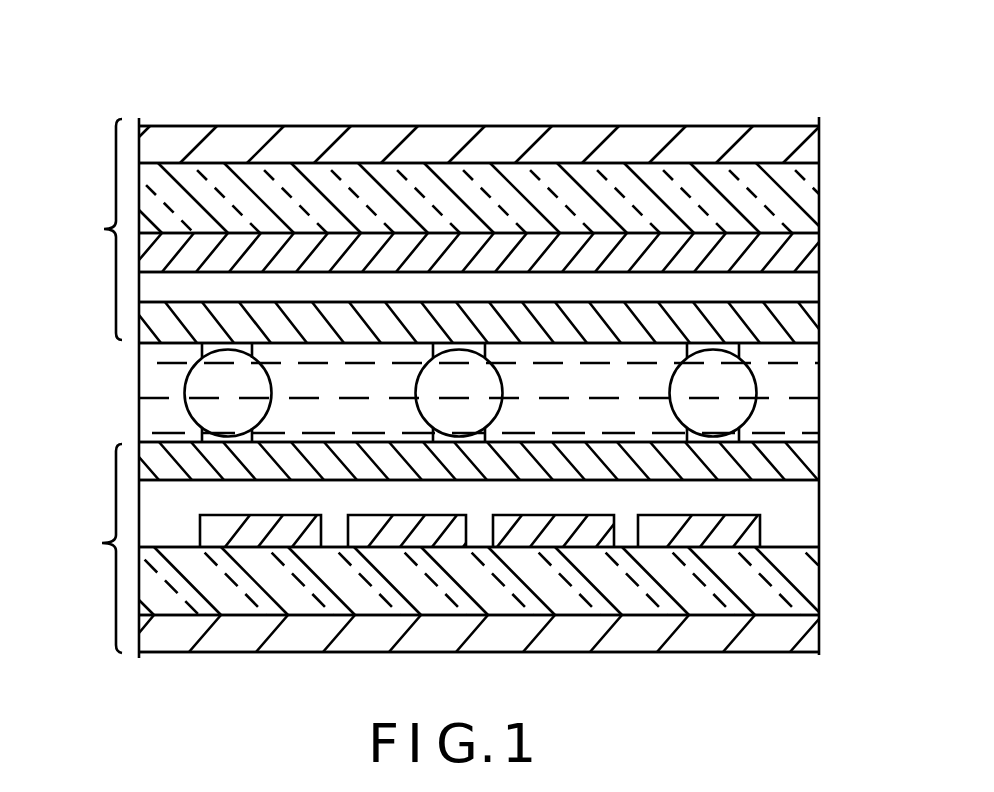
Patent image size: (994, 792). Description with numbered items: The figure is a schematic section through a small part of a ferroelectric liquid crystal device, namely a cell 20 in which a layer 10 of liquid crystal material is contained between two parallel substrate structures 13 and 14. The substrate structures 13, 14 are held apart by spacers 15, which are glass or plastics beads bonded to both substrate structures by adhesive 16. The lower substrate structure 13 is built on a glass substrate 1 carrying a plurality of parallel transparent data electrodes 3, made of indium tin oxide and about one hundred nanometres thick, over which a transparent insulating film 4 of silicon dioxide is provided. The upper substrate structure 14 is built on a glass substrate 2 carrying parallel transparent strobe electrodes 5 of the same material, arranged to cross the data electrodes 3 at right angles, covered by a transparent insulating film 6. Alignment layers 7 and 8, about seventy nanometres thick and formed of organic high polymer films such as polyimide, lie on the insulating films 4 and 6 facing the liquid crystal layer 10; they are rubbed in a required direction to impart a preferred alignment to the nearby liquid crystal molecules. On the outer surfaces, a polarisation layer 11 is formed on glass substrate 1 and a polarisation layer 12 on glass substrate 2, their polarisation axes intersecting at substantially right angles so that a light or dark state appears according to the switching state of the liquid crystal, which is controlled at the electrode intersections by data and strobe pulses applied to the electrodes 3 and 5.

The cell 20 is at (643, 98).
The polarisation layer 12 is at (807, 143).
The glass substrate 2 is at (803, 193).
The strobe electrodes 5 is at (797, 248).
The insulating film 6 is at (800, 283).
The alignment layer 8 is at (793, 318).
The substrate structure 14 is at (94, 229).
The layer of liquid crystal material 10 is at (162, 382).
The spacers 15 is at (727, 382).
The adhesive 16 is at (733, 433).
The alignment layer 7 is at (793, 457).
The insulating film 4 is at (793, 500).
The data electrodes 3 is at (225, 527).
The substrate structure 13 is at (92, 548).
The glass substrate 1 is at (803, 583).
The polarisation layer 11 is at (797, 632).